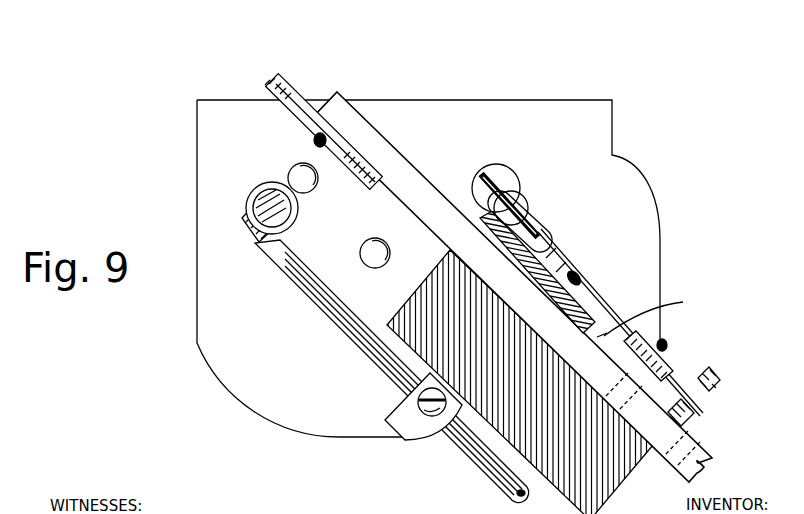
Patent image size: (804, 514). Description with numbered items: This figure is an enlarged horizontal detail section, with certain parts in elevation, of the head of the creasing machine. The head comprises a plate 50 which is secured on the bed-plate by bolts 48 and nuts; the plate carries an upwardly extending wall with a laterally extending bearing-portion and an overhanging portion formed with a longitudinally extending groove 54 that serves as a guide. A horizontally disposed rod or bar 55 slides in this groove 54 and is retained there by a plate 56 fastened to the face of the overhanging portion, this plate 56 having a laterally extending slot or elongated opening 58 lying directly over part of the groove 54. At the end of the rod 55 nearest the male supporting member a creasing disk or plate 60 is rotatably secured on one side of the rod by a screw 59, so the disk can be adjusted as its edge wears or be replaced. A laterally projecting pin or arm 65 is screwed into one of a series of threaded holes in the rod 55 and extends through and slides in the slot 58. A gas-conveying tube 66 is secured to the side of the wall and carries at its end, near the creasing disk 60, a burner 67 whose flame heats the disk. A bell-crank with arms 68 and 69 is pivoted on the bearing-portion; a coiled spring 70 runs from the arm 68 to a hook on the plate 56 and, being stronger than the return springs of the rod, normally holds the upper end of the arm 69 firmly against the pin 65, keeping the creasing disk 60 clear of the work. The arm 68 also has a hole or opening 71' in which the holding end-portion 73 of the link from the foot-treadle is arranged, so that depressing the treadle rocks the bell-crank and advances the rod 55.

The bolts 48 is at (366, 243).
The plate 50 is at (472, 103).
The groove 54 is at (470, 281).
The rod or bar 55 is at (407, 163).
The plate 56 is at (573, 287).
The slot or elongated opening 58 is at (672, 302).
The screw 59 is at (314, 139).
The creasing disk or plate 60 is at (287, 84).
The pin or arm 65 is at (716, 381).
The gas-conveying tube 66 is at (317, 298).
The burner 67 is at (262, 197).
The arm 68 is at (545, 244).
The arm 69 is at (698, 398).
The coiled spring 70 is at (581, 276).
The hole or opening 71' is at (557, 211).
The holding end-portion 73 is at (517, 200).